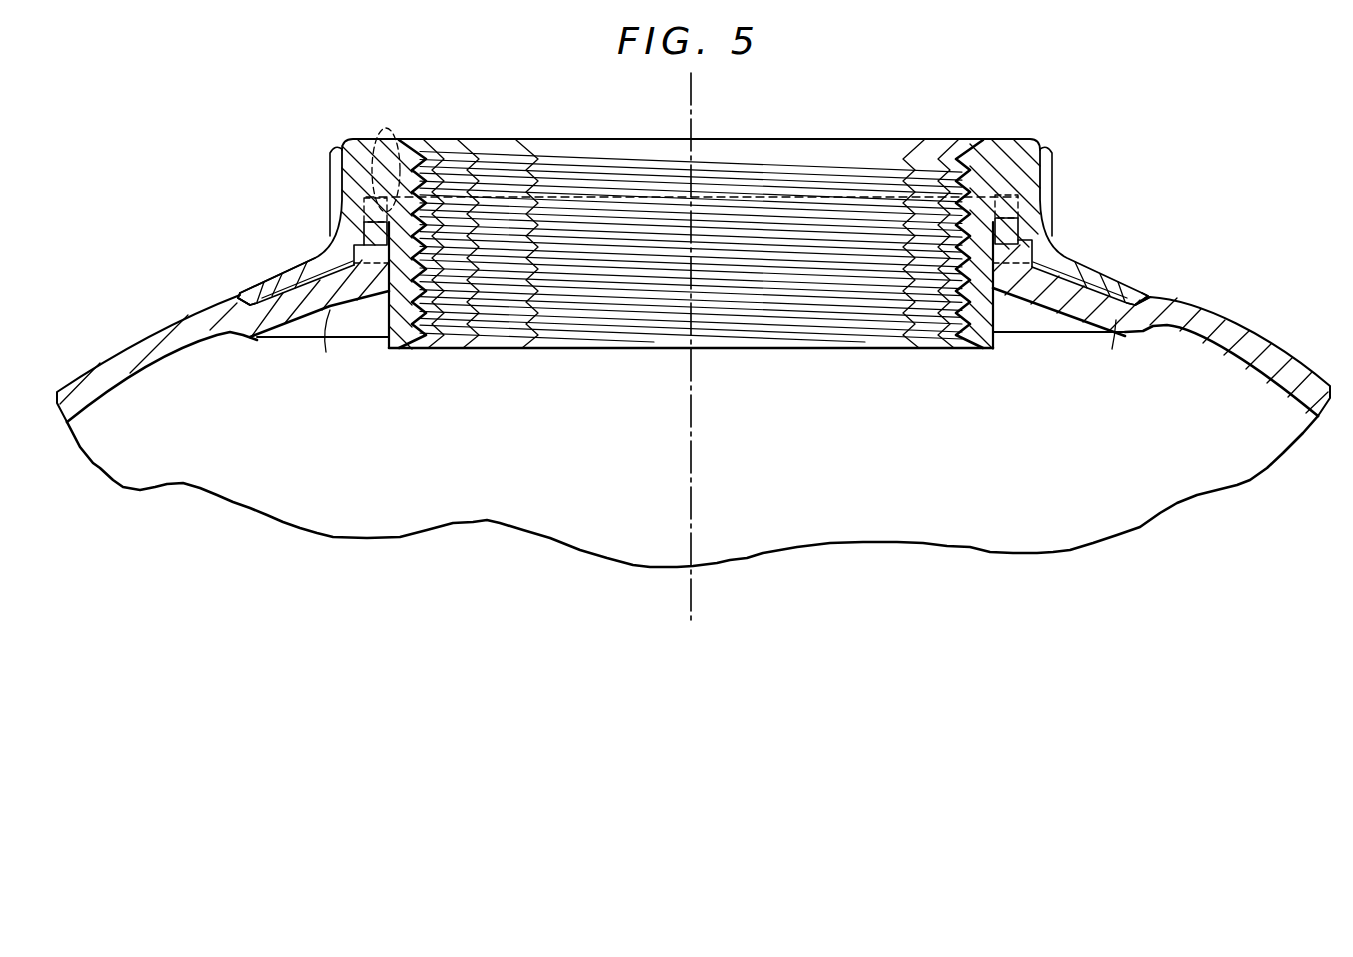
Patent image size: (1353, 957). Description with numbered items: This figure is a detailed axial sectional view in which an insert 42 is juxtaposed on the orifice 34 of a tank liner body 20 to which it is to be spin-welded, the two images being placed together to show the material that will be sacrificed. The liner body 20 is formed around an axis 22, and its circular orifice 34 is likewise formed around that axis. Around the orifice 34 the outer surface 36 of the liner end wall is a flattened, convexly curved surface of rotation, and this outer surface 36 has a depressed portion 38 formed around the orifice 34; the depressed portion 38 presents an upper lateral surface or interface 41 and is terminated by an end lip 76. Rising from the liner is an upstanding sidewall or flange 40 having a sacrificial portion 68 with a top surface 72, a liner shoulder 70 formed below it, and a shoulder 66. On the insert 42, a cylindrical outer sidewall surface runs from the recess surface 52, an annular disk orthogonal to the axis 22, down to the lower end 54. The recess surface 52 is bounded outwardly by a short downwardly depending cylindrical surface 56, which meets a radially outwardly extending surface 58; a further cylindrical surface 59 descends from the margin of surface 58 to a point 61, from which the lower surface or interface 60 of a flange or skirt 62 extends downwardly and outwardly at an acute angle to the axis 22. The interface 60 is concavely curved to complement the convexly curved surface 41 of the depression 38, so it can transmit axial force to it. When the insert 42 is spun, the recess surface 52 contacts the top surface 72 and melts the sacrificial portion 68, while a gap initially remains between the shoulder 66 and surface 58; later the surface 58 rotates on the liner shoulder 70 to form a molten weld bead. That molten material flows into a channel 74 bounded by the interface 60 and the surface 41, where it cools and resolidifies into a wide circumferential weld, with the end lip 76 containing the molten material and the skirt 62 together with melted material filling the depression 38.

The tank liner body 20 is at (1276, 339).
The axis 22 is at (697, 405).
The orifice 34 is at (811, 377).
The outer surface 36 is at (1205, 312).
The depressed portion 38 is at (1058, 308).
The upstanding sidewall or flange 40 is at (1048, 192).
The upper lateral surface or interface 41 is at (717, 347).
The insert 42 is at (1011, 134).
The recess surface 52 is at (370, 206).
The lower end 54 is at (988, 350).
The downwardly depending cylindrical surface 56 is at (1050, 215).
The radially outwardly extending surface 58 is at (1048, 244).
The cylindrical surface 59 is at (1022, 268).
The lower surface or interface 60 is at (1116, 285).
The point 61 is at (1062, 265).
The flange or skirt 62 is at (262, 284).
The shoulder 66 is at (322, 252).
The portion 68 is at (400, 158).
The liner shoulder 70 is at (352, 222).
The top surface 72 is at (380, 145).
The channel 74 is at (282, 315).
The end lip 76 is at (1142, 298).